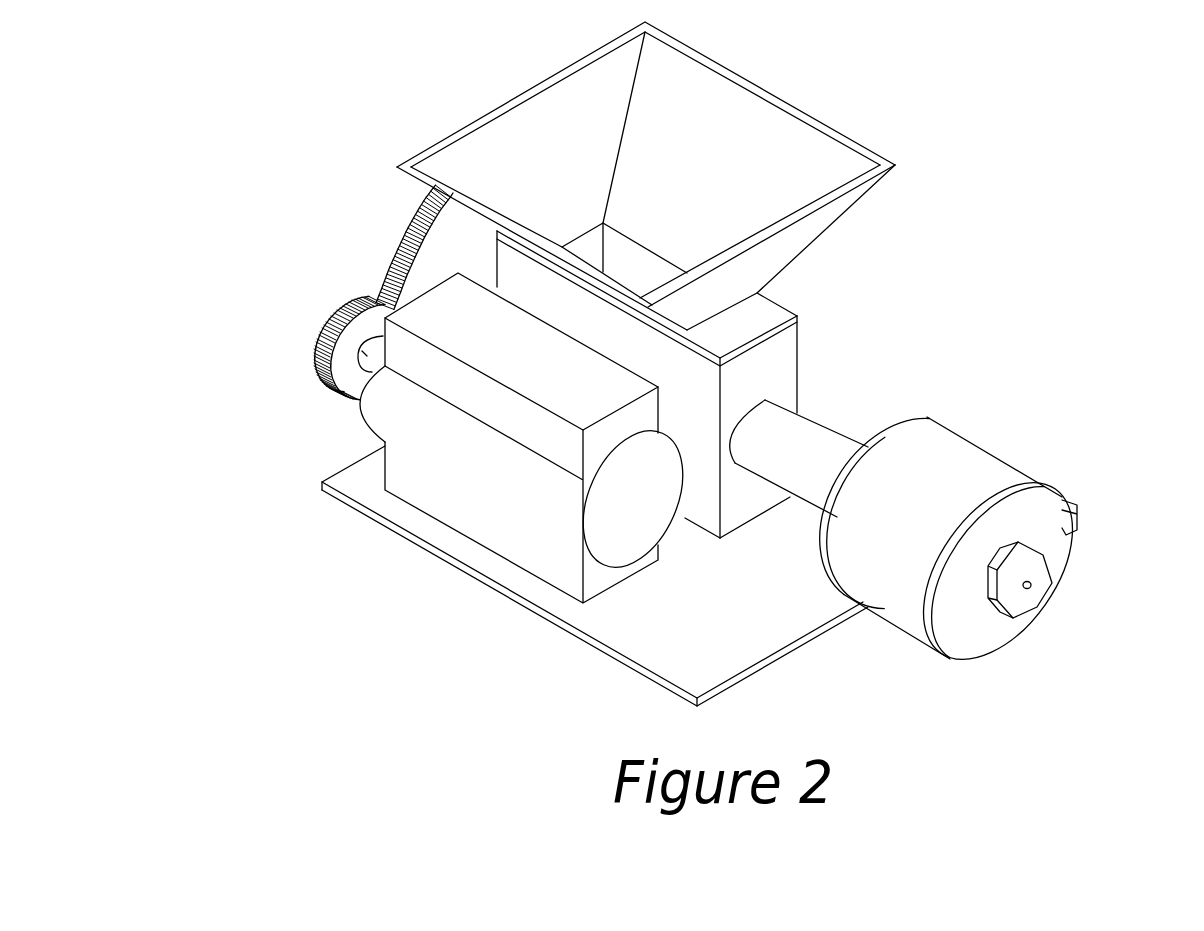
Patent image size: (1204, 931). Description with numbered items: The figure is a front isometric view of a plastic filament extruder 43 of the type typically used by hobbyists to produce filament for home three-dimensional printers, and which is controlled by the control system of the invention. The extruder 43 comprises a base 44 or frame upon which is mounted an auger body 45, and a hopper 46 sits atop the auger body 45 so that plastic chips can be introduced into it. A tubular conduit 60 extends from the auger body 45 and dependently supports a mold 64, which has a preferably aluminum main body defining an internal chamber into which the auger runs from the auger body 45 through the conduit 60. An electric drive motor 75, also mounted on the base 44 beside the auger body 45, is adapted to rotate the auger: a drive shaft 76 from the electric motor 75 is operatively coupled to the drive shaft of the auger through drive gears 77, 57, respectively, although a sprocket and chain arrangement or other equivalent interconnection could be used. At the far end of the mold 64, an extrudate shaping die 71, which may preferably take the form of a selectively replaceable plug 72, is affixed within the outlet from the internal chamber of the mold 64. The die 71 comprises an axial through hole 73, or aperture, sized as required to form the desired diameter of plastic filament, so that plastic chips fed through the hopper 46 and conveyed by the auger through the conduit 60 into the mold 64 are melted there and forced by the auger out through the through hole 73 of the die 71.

The extruder 43 is at (1113, 213).
The base 44 is at (740, 642).
The auger body 45 is at (846, 298).
The hopper 46 is at (488, 62).
The drive gear 57 is at (398, 243).
The tubular conduit 60 is at (800, 440).
The mold 64 is at (1008, 578).
The extrudate shaping die 71 is at (1037, 565).
The selectively replaceable plug 72 is at (995, 612).
The axial through hole 73 is at (1031, 586).
The electric drive motor 75 is at (458, 463).
The drive shaft 76 is at (370, 336).
The drive gear 77 is at (330, 320).